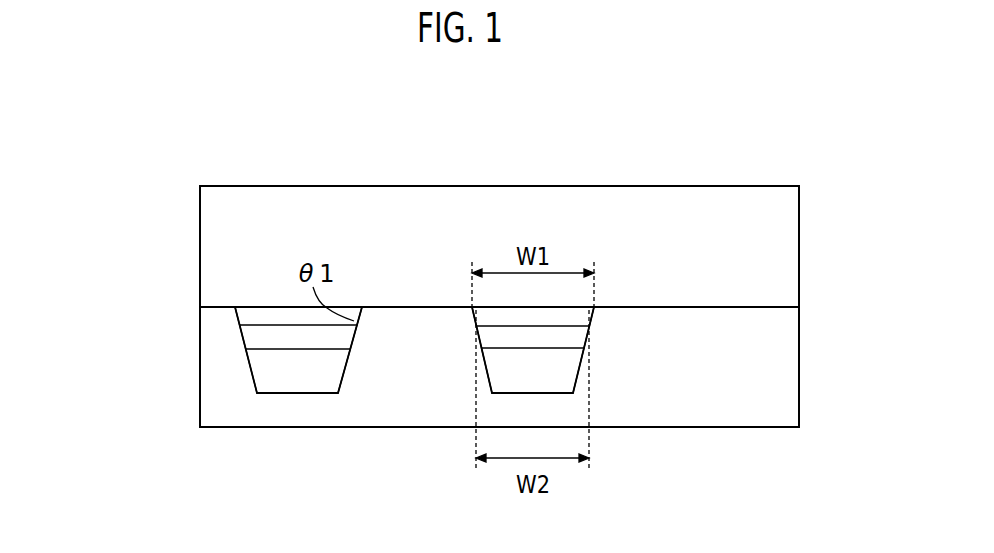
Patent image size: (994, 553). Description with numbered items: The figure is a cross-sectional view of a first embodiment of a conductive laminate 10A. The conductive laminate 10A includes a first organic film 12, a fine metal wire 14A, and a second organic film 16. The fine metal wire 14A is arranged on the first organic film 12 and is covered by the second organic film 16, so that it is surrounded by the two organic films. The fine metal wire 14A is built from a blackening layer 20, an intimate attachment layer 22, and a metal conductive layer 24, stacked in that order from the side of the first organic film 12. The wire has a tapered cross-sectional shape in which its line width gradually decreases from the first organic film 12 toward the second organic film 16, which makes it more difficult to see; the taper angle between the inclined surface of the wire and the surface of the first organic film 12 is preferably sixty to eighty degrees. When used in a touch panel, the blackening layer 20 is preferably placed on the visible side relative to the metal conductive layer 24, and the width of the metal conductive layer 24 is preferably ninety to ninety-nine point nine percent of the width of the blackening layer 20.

The conductive laminate 10A is at (814, 165).
The first organic film 12 is at (787, 236).
The second organic film 16 is at (787, 379).
The fine metal wire 14A is at (122, 308).
The blackening layer 20 is at (258, 314).
The intimate attachment layer 22 is at (258, 342).
The metal conductive layer 24 is at (266, 377).